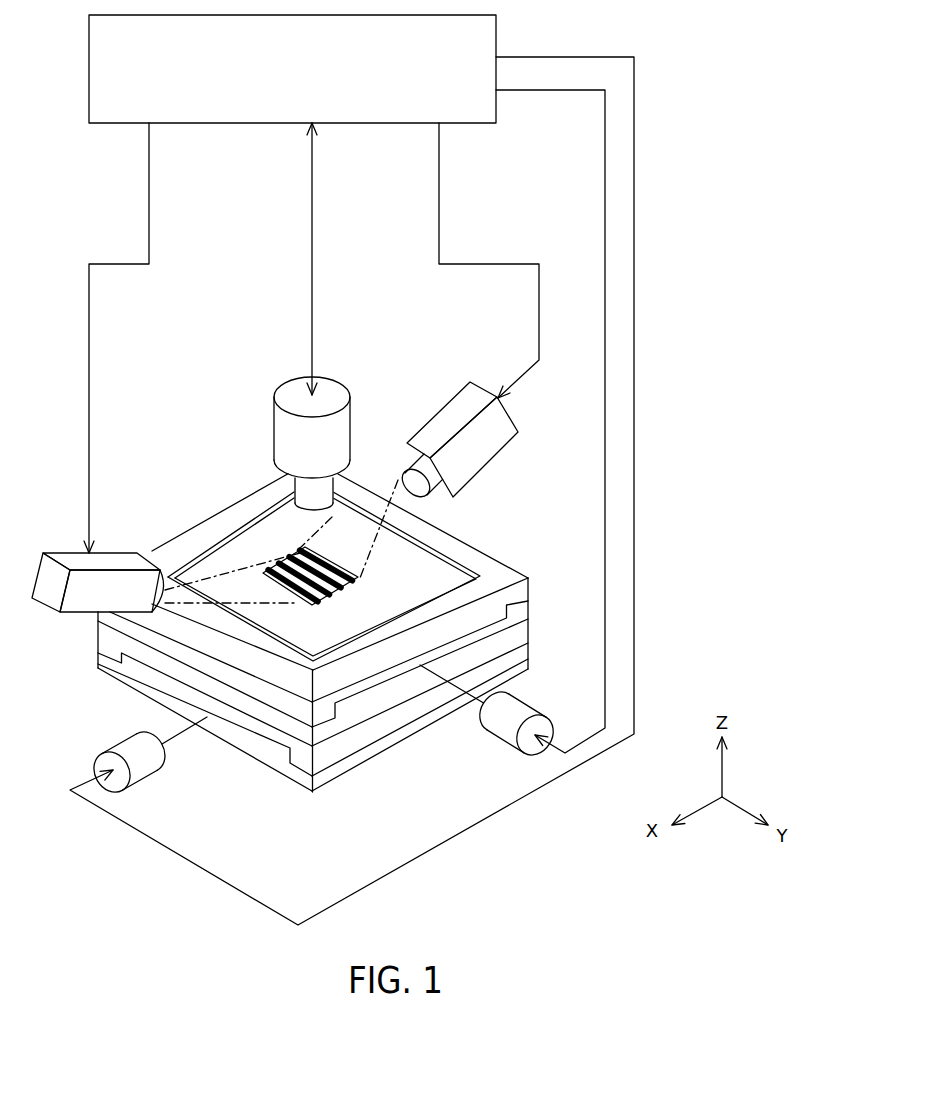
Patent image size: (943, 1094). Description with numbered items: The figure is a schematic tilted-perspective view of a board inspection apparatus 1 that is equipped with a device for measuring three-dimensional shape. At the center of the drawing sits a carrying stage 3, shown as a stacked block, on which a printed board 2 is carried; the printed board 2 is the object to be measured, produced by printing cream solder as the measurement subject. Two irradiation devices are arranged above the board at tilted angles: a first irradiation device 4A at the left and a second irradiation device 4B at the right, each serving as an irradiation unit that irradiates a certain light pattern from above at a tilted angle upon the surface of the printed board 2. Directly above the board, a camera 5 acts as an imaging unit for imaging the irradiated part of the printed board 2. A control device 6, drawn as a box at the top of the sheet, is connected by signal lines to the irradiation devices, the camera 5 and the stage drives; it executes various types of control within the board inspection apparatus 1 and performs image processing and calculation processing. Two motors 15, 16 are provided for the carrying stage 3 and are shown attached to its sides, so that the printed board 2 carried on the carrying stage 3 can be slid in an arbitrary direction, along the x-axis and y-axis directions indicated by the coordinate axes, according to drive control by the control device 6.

The board inspection apparatus 1 is at (533, 823).
The printed board 2 is at (277, 532).
The carrying stage 3 is at (187, 527).
The first irradiation device 4A is at (127, 553).
The second irradiation device 4B is at (438, 408).
The camera 5 is at (273, 431).
The control device 6 is at (188, 124).
The motor 15 is at (110, 748).
The motor 16 is at (501, 744).